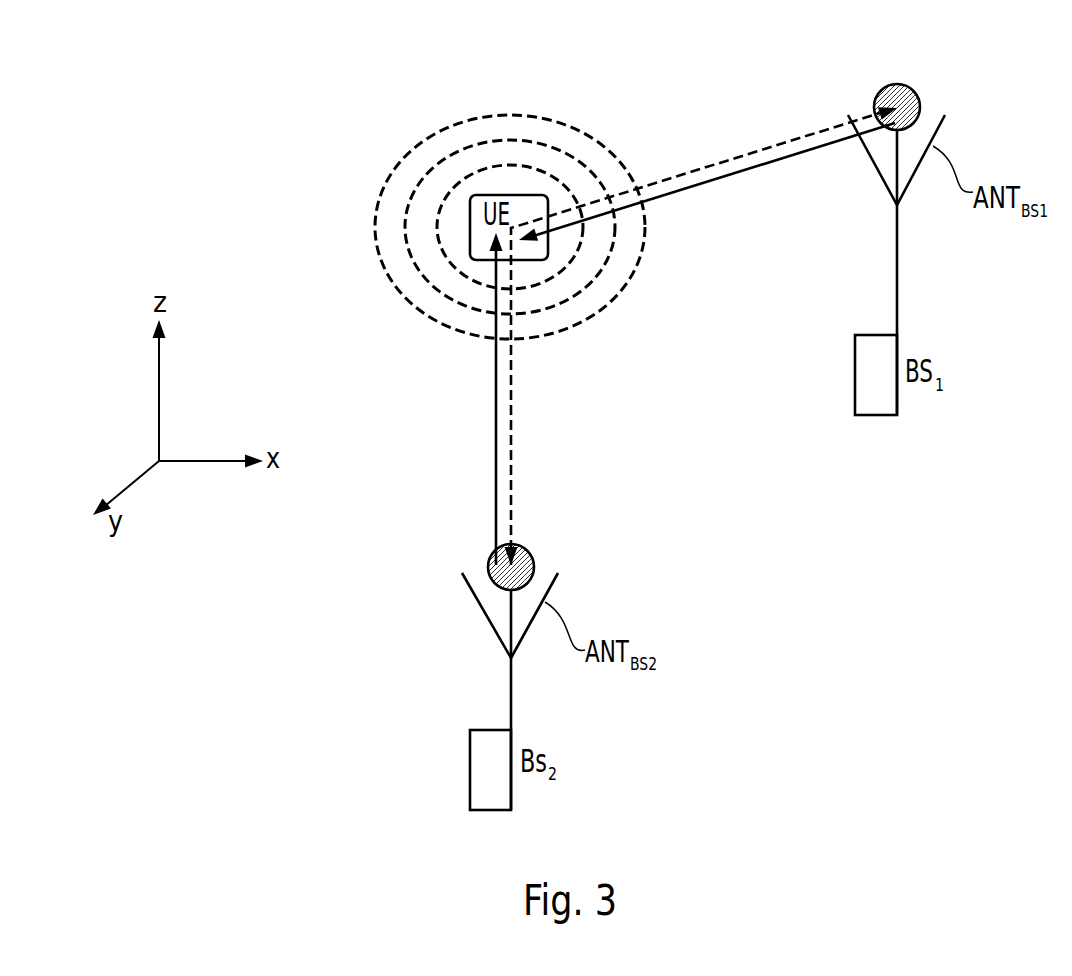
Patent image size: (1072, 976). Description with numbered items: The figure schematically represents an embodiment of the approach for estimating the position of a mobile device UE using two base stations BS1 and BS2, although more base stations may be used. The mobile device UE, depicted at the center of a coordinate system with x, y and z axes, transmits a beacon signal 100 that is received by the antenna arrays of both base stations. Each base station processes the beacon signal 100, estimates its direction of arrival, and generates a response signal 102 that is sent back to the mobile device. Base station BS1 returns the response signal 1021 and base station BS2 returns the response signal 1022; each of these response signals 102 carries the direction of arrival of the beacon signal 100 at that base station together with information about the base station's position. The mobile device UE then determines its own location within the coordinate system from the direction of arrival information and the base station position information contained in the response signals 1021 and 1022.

The beacon signal 100 is at (510, 117).
The response signal 102 is at (641, 344).
The response signal from base station BS1 1021 is at (723, 178).
The response signal from base station BS2 1022 is at (496, 497).